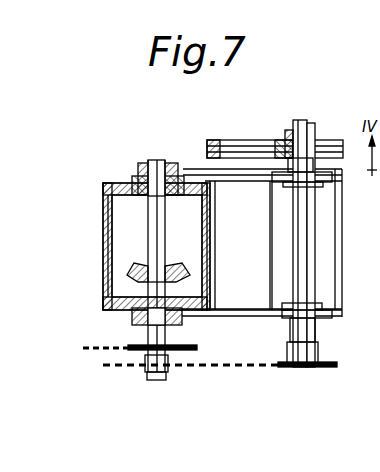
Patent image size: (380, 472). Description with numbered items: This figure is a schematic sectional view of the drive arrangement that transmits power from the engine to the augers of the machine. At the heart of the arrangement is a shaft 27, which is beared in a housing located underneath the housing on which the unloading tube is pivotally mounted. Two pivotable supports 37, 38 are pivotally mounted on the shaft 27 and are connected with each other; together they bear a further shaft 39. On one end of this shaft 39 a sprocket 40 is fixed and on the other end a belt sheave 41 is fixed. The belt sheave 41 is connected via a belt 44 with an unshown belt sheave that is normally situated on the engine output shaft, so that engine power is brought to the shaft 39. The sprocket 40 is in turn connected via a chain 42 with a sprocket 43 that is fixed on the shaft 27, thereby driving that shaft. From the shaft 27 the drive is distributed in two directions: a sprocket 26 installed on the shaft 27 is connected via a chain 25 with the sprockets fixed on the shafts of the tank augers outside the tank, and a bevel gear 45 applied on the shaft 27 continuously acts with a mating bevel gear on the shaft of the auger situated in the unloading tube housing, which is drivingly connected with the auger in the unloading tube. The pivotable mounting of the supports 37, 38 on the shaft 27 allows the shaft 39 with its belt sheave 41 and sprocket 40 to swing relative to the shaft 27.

The chain 25 is at (95, 347).
The sprocket 26 is at (131, 345).
The shaft 27 is at (153, 222).
The pivotable support 37 is at (236, 318).
The pivotable support 38 is at (253, 176).
The shaft 39 is at (305, 227).
The sprocket 40 is at (322, 368).
The belt sheave 41 is at (227, 143).
The chain 42 is at (227, 368).
The sprocket 43 is at (184, 370).
The belt 44 is at (203, 150).
The bevel gear 45 is at (134, 268).